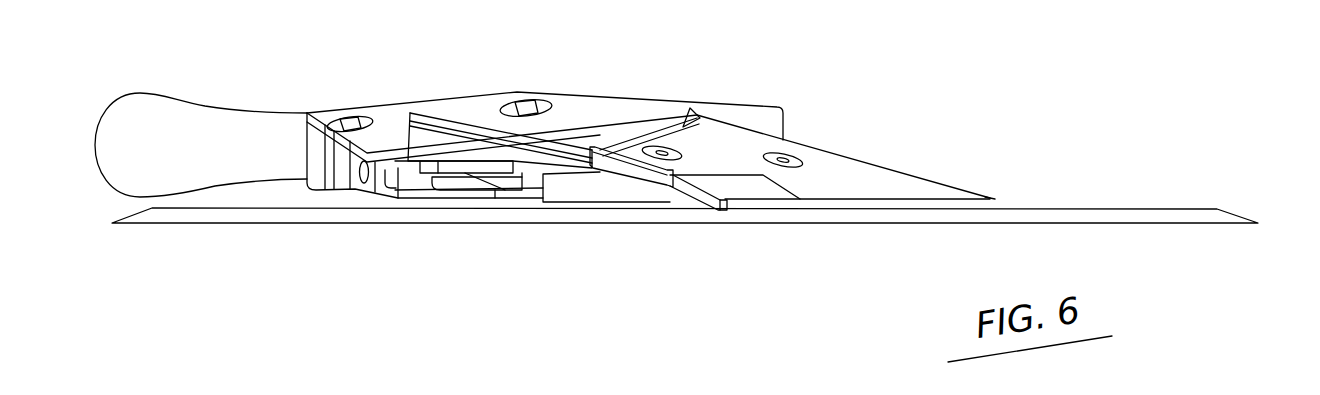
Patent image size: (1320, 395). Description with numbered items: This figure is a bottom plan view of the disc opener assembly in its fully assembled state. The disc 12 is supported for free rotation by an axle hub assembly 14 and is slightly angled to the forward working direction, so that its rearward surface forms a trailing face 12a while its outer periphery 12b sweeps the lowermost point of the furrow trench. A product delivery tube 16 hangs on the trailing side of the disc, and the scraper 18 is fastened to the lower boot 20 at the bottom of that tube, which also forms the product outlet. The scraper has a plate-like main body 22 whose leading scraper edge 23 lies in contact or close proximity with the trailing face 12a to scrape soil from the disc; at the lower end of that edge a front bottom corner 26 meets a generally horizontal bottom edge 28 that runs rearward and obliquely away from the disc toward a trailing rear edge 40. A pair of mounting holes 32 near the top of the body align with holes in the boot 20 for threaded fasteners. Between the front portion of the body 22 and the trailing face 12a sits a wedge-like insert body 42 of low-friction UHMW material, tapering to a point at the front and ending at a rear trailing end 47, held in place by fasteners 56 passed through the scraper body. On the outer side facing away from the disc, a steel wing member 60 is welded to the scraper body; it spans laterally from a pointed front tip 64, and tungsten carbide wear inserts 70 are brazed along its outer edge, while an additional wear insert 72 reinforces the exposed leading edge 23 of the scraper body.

The disc 12 is at (330, 222).
The trailing face of the disc 12a is at (1088, 209).
The disc periphery 12b is at (108, 227).
The axle hub assembly 14 is at (736, 122).
The product delivery tube 16 is at (176, 115).
The scraper 18 is at (913, 170).
The lower boot 20 is at (422, 189).
The main body of the scraper 22 is at (832, 174).
The leading scraper edge 23 is at (994, 203).
The front bottom corner 26 is at (722, 203).
The bottom edge of the scraper body 28 is at (687, 198).
The mounting holes 32 is at (341, 117).
The trailing rear edge of the scraper body 40 is at (350, 148).
The insert body 42 is at (605, 193).
The rear trailing end of the insert body 47 is at (537, 199).
The fasteners 56 is at (655, 149).
The wing member 60 is at (449, 152).
The pointed front tip of the wing member 64 is at (415, 122).
The wear inserts 70 is at (438, 121).
The additional wear insert 72 is at (730, 190).